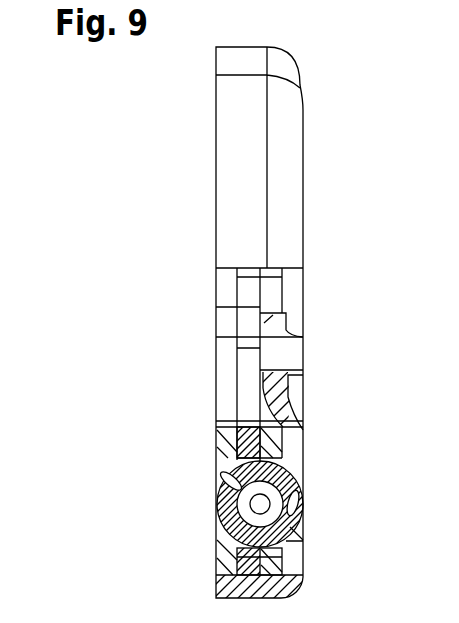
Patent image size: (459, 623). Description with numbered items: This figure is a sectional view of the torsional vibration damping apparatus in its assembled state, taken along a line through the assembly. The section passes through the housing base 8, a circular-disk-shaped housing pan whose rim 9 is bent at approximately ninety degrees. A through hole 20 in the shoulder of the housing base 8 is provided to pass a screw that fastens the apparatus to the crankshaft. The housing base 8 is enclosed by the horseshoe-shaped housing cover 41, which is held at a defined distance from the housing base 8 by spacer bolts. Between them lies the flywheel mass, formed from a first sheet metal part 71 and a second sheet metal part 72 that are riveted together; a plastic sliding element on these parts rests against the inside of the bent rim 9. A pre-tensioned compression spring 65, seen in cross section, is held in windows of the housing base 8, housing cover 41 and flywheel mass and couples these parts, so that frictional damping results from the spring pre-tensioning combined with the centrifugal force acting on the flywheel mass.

The housing base 8 is at (288, 448).
The rim 9 is at (233, 578).
The through hole 20 is at (282, 357).
The housing cover 41 is at (225, 562).
The compression spring 65 is at (283, 522).
The first sheet metal part 71 is at (237, 440).
The second sheet metal part 72 is at (288, 428).